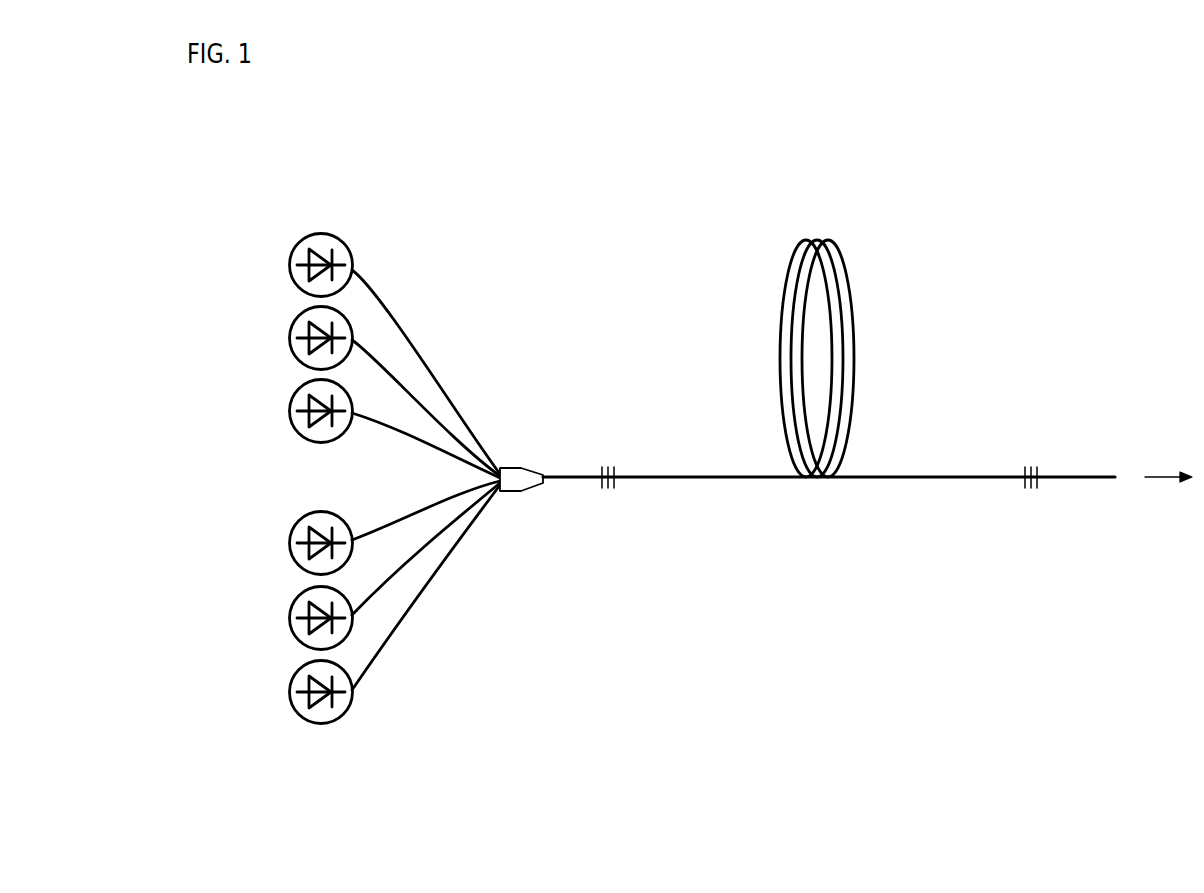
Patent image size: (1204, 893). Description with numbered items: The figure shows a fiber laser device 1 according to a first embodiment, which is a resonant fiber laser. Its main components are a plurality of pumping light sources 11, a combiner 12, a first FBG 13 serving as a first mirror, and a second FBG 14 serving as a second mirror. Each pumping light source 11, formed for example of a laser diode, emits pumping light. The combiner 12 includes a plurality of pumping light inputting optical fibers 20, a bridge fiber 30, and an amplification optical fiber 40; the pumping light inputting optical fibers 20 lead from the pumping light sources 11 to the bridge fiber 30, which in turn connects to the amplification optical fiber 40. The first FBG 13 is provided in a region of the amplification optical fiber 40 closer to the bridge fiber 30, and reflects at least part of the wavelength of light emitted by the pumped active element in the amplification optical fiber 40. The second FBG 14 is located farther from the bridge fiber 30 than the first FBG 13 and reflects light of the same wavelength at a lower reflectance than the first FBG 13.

The fiber laser device 1 is at (1122, 208).
The pumping light source 11 is at (292, 254).
The combiner 12 is at (561, 385).
The first FBG 13 is at (607, 467).
The second FBG 14 is at (1031, 470).
The pumping light inputting optical fiber 20 is at (390, 318).
The bridge fiber 30 is at (525, 477).
The amplification optical fiber 40 is at (747, 479).